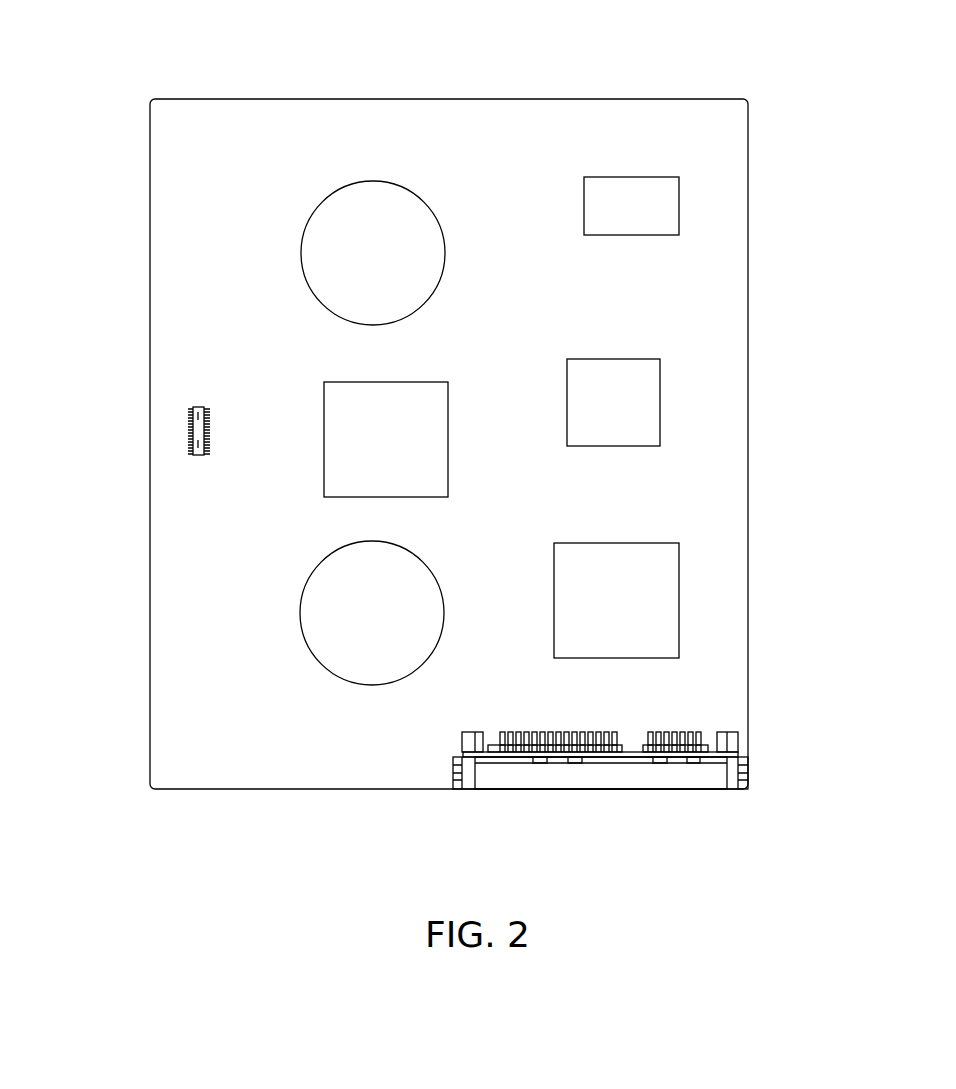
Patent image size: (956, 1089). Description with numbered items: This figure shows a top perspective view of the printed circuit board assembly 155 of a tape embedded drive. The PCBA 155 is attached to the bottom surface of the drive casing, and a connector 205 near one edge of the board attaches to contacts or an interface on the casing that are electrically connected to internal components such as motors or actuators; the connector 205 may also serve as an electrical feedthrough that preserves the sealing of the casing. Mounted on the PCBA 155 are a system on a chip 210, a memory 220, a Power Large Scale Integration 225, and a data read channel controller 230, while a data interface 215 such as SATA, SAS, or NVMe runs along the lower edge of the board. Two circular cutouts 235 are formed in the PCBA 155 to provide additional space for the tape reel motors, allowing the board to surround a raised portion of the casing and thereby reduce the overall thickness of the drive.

The printed circuit board assembly 155 is at (715, 125).
The connector 205 is at (188, 420).
The system on a chip 210 is at (653, 602).
The data interface 215 is at (616, 790).
The memory 220 is at (660, 202).
The Power Large Scale Integration 225 is at (645, 389).
The data read channel controller 230 is at (323, 393).
The cutouts 235 is at (323, 244).